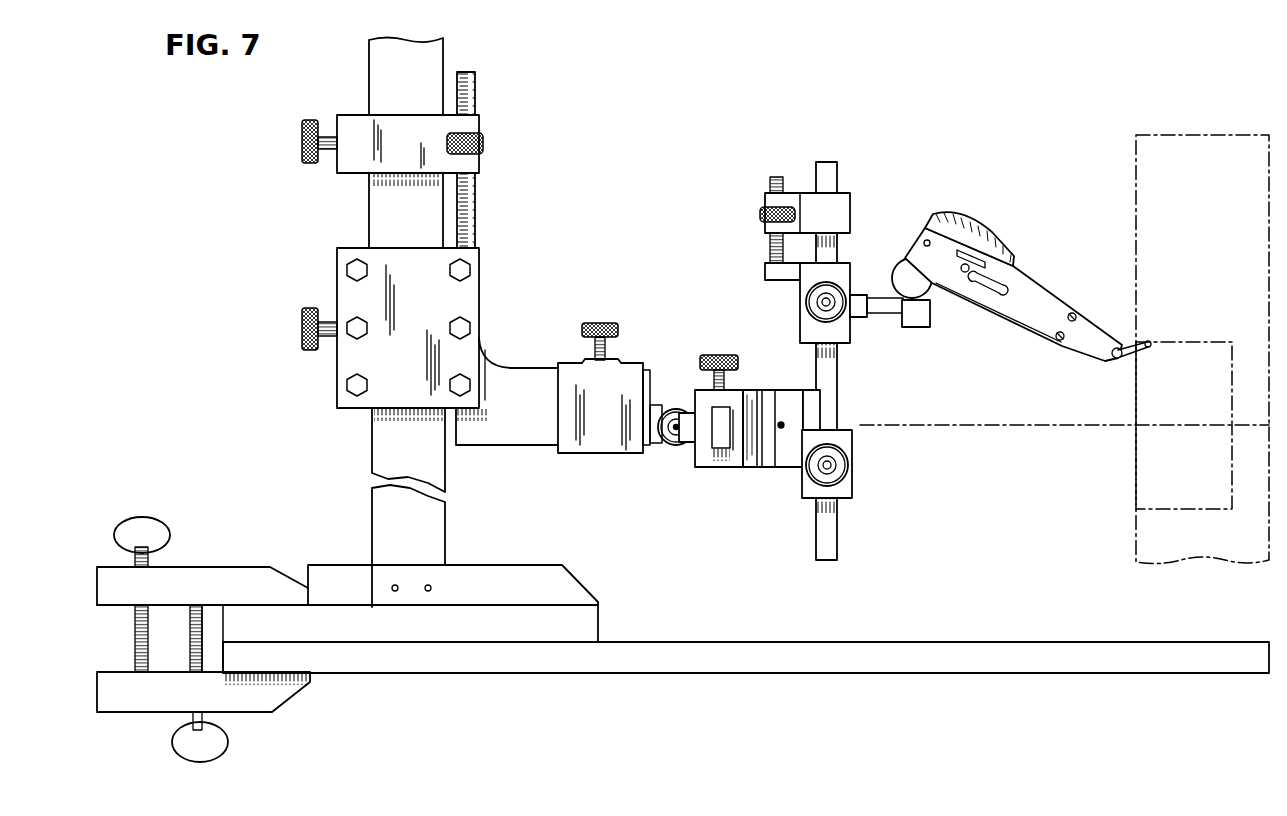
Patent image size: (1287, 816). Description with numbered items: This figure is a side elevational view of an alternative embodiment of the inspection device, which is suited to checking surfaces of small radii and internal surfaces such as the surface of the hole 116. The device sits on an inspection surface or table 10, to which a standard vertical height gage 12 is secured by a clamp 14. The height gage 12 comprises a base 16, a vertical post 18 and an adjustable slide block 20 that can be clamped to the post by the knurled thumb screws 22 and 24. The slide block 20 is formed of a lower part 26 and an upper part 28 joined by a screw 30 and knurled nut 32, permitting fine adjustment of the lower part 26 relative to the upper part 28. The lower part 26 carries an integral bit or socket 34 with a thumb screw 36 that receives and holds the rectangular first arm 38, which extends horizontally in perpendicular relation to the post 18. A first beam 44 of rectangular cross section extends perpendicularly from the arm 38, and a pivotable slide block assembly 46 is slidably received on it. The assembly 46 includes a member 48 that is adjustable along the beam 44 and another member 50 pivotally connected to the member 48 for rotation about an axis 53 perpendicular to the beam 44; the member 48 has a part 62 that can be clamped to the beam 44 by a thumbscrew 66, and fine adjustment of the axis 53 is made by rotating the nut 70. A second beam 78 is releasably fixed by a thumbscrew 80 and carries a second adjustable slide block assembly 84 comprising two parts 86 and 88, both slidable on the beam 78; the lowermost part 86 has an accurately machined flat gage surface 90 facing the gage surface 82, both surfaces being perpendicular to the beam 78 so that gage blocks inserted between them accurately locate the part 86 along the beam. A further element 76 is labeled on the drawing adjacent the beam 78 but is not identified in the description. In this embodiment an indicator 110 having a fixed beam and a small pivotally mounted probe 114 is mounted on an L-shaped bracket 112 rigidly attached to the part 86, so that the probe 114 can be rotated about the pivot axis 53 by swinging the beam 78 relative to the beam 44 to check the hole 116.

The inspection surface or table 10 is at (688, 641).
The vertical height gage 12 is at (601, 583).
The clamp 14 is at (222, 567).
The base 16 is at (600, 616).
The vertical post 18 is at (369, 78).
The adjustable slide block 20 is at (519, 302).
The knurled thumb screw 22 is at (305, 336).
The knurled thumb screw 24 is at (302, 150).
The lower part of slide block 26 is at (408, 317).
The upper part of slide block 28 is at (395, 145).
The screw 30 is at (478, 198).
The knurled nut 32 is at (486, 142).
The bit or socket 34 is at (566, 362).
The thumb screw 36 is at (599, 322).
The first arm 38 is at (549, 452).
The first beam 44 is at (722, 467).
The pivotable slide block assembly 46 is at (766, 360).
The member 48 is at (753, 467).
The member 50 is at (805, 390).
The pivot axis 53 is at (992, 423).
The part of member 62 is at (697, 400).
The thumbscrew 66 is at (723, 355).
The nut 70 is at (663, 453).
The post serrations 76 is at (812, 500).
The second beam 78 is at (816, 168).
The thumbscrew 80 is at (852, 465).
The gage surface 82 is at (840, 425).
The second adjustable slide block assembly 84 is at (752, 182).
The part 86 is at (765, 275).
The part 88 is at (760, 213).
The flat gage surface 90 is at (816, 353).
The indicator 110 is at (1037, 291).
The L-shaped bracket 112 is at (868, 320).
The probe 114 is at (1150, 351).
The hole 116 is at (1190, 507).